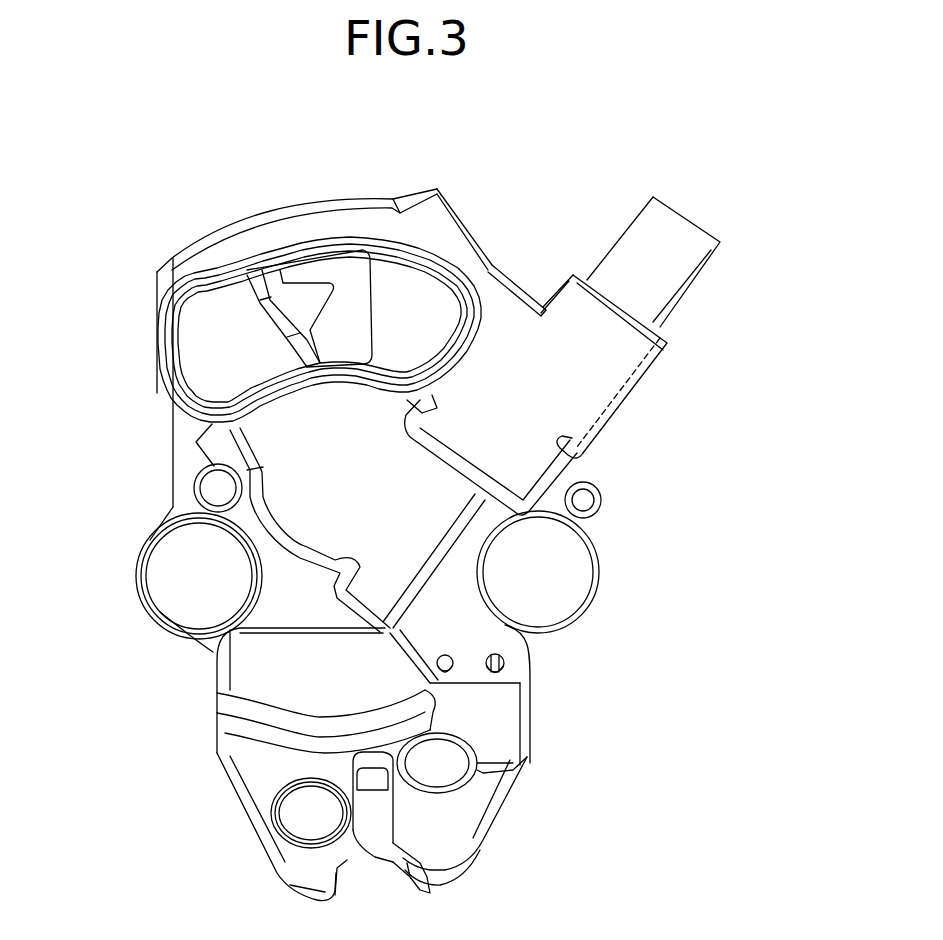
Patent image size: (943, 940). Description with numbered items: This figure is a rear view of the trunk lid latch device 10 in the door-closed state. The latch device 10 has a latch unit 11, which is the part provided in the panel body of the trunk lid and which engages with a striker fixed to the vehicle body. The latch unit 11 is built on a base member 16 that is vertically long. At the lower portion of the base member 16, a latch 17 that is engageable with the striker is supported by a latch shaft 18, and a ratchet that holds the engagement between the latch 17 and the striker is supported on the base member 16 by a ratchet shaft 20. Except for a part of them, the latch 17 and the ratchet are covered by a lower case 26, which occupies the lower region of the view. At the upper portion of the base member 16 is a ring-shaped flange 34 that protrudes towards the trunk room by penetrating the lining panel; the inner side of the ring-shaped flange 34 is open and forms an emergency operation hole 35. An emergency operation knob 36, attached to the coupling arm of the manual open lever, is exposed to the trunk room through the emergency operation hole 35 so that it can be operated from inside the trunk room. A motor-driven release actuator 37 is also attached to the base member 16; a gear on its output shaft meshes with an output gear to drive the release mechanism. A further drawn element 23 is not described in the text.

The trunk lid latch device 10 is at (469, 594).
The latch unit 11 is at (368, 594).
The base member 16 is at (180, 470).
The latch 17 is at (382, 830).
The latch shaft 18 is at (448, 762).
The ratchet shaft 20 is at (290, 815).
The tab portion 23 is at (373, 800).
The lower case 26 is at (240, 757).
The ring-shaped flange 34 is at (222, 272).
The emergency operation hole 35 is at (205, 353).
The emergency operation knob 36 is at (327, 270).
The release actuator 37 is at (553, 383).